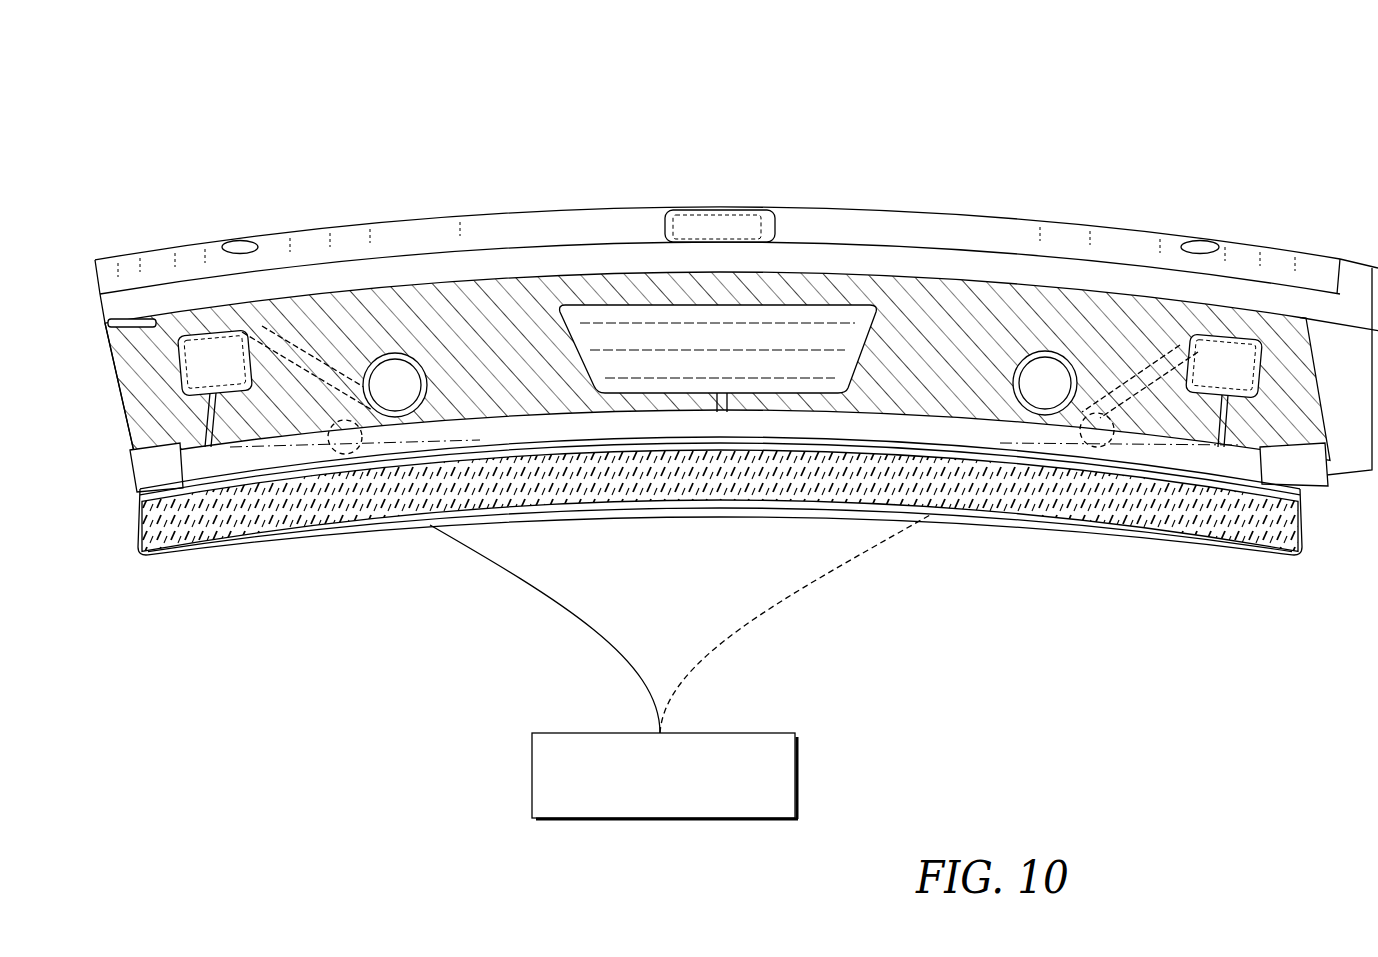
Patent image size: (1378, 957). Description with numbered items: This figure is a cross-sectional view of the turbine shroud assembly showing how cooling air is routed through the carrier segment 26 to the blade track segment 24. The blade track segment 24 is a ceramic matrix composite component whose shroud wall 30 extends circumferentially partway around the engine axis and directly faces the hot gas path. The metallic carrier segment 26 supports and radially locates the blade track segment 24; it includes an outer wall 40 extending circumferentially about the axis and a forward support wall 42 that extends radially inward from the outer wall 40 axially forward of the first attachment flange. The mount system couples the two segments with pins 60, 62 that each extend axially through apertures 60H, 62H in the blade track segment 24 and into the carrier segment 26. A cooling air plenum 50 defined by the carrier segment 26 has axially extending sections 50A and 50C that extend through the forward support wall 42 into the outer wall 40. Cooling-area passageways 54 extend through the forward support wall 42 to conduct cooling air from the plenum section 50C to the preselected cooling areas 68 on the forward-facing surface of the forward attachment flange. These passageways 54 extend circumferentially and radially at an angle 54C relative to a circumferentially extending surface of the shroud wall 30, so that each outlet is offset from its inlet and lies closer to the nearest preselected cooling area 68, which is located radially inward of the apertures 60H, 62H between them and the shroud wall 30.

The blade track segment 24 is at (1060, 592).
The carrier segment 26 is at (930, 150).
The shroud wall 30 is at (970, 535).
The outer wall 40 is at (815, 200).
The forward support wall 42 is at (100, 383).
The plenum 50 is at (732, 237).
The axially extending section 50A is at (693, 343).
The axially extending section 50C is at (223, 350).
The cooling-area passageway 54 is at (313, 380).
The angle 54C is at (250, 410).
The pin 60 is at (393, 395).
The aperture 60H is at (357, 390).
The pin 62 is at (1050, 393).
The aperture 62H is at (1097, 403).
The preselected cooling areas 68 is at (592, 733).